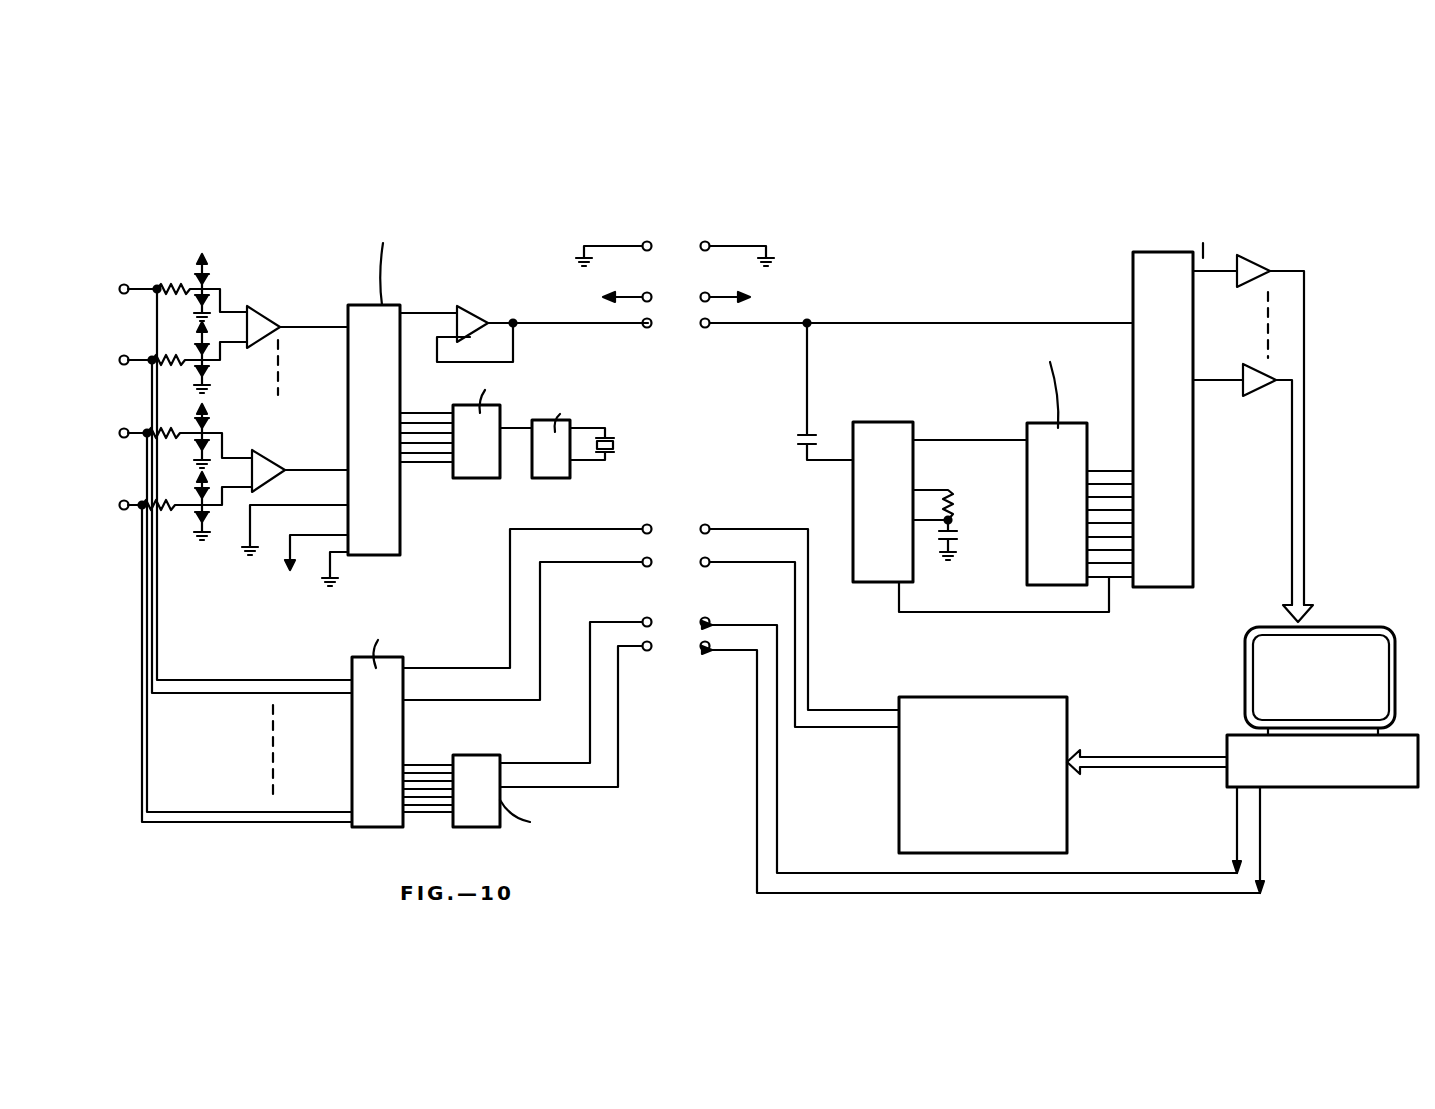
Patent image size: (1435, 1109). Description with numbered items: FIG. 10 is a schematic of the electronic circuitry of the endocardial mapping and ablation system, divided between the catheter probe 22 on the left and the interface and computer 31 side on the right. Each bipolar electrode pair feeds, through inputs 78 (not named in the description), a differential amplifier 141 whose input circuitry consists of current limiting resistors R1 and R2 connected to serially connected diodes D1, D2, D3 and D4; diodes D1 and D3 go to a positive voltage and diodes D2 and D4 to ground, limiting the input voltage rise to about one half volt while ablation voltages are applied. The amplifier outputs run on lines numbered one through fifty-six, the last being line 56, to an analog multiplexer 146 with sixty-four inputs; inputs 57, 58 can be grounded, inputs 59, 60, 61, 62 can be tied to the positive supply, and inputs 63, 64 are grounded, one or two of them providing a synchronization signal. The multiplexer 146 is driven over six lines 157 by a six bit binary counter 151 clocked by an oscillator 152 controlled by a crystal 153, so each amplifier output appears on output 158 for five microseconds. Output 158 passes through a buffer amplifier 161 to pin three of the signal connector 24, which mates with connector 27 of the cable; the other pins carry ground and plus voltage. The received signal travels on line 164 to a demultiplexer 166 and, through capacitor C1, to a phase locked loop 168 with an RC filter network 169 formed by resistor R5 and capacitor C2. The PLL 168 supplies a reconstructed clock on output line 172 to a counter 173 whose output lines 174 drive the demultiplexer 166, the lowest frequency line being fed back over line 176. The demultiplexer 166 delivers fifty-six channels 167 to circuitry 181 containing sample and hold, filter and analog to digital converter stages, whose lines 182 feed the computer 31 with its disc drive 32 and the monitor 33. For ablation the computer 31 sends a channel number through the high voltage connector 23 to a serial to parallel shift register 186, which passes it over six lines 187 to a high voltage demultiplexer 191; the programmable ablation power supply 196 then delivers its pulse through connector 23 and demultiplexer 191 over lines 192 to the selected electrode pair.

The catheter probe 22 is at (552, 178).
The computer 31 is at (962, 158).
The input terminals 78 is at (140, 290).
The current limiting resistor R1 is at (172, 286).
The current limiting resistor R2 is at (178, 372).
The diode D1 is at (210, 282).
The diode D2 is at (210, 308).
The diode D3 is at (210, 352).
The diode D4 is at (210, 376).
The differential amplifier 141 is at (268, 322).
The multiplexer input 56 is at (762, 413).
The multiplexer input 57 is at (298, 489).
The multiplexer input 58 is at (298, 489).
The multiplexer input 59 is at (295, 553).
The multiplexer input 60 is at (295, 553).
The multiplexer input 61 is at (295, 553).
The multiplexer input 62 is at (295, 553).
The multiplexer input 63 is at (376, 448).
The multiplexer input 64 is at (400, 528).
The analog multiplexer 146 is at (397, 392).
The multiplexer output 158 is at (422, 313).
The buffer amplifier 161 is at (470, 315).
The counter output lines 157 is at (425, 418).
The six bit binary counter 151 is at (472, 478).
The oscillator 152 is at (550, 478).
The crystal 153 is at (618, 446).
The signal connector 24 is at (648, 240).
The mating connector 27 is at (705, 240).
The high voltage connector 23 is at (650, 522).
The line 164 is at (1006, 322).
The capacitor C1 is at (798, 455).
The phase locked loop 168 is at (868, 584).
The PLL output line 172 is at (975, 438).
The RC filter network 169 is at (940, 490).
The resistor R5 is at (952, 507).
The capacitor C2 is at (958, 540).
The counter 173 is at (1020, 578).
The line 176 is at (1002, 614).
The counter output lines 174 is at (1106, 470).
The demultiplexer 166 is at (1152, 252).
The output channels 167 is at (1224, 268).
The circuitry 181 is at (1258, 262).
The output lines 182 is at (1308, 345).
The monitor 33 is at (1382, 666).
The disc drive 32 is at (1390, 788).
The high voltage ablation power supply 196 is at (1062, 728).
The high voltage demultiplexer 191 is at (350, 832).
The lines 192 is at (218, 826).
The lines 187 is at (428, 765).
The serial to parallel shift register 186 is at (490, 762).